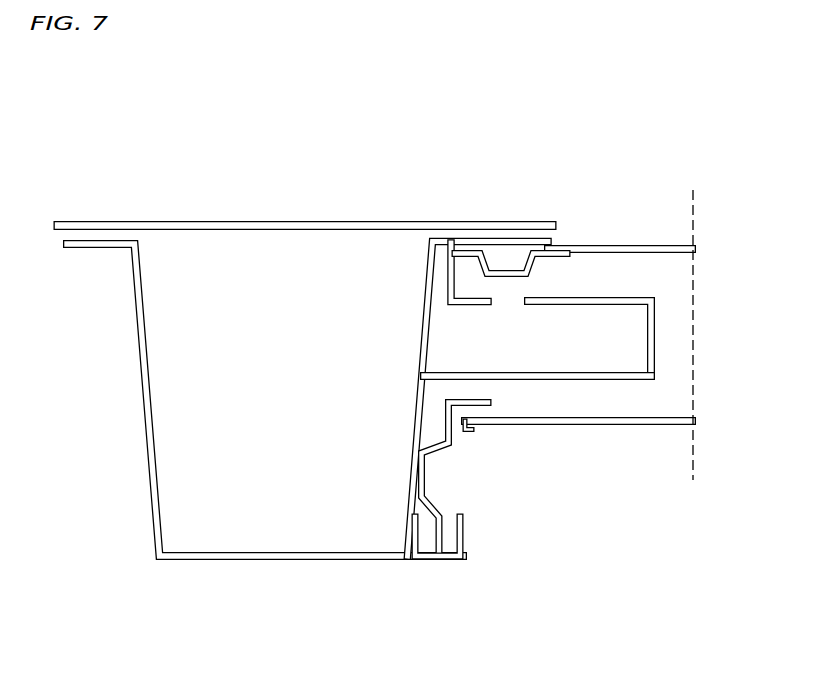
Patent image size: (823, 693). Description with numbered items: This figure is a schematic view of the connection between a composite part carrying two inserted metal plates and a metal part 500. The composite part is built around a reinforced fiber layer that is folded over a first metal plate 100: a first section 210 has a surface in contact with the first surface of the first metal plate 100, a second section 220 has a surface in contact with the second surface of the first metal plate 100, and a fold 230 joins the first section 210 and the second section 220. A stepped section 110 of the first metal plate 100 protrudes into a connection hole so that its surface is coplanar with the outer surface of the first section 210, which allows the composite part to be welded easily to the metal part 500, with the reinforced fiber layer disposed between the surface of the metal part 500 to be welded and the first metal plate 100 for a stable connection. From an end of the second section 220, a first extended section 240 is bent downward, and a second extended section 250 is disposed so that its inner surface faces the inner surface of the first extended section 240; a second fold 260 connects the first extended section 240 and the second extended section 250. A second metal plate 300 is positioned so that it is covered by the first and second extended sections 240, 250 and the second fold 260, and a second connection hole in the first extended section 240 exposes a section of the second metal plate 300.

The first metal plate 100 is at (571, 177).
The stepped section 110 is at (503, 244).
The first section 210 is at (600, 245).
The second section 220 is at (630, 306).
The fold 230 is at (452, 277).
The first extended section 240 is at (560, 425).
The second extended section 250 is at (612, 380).
The second fold 260 is at (433, 560).
The second metal plate 300 is at (477, 422).
The metal part 500 is at (185, 222).